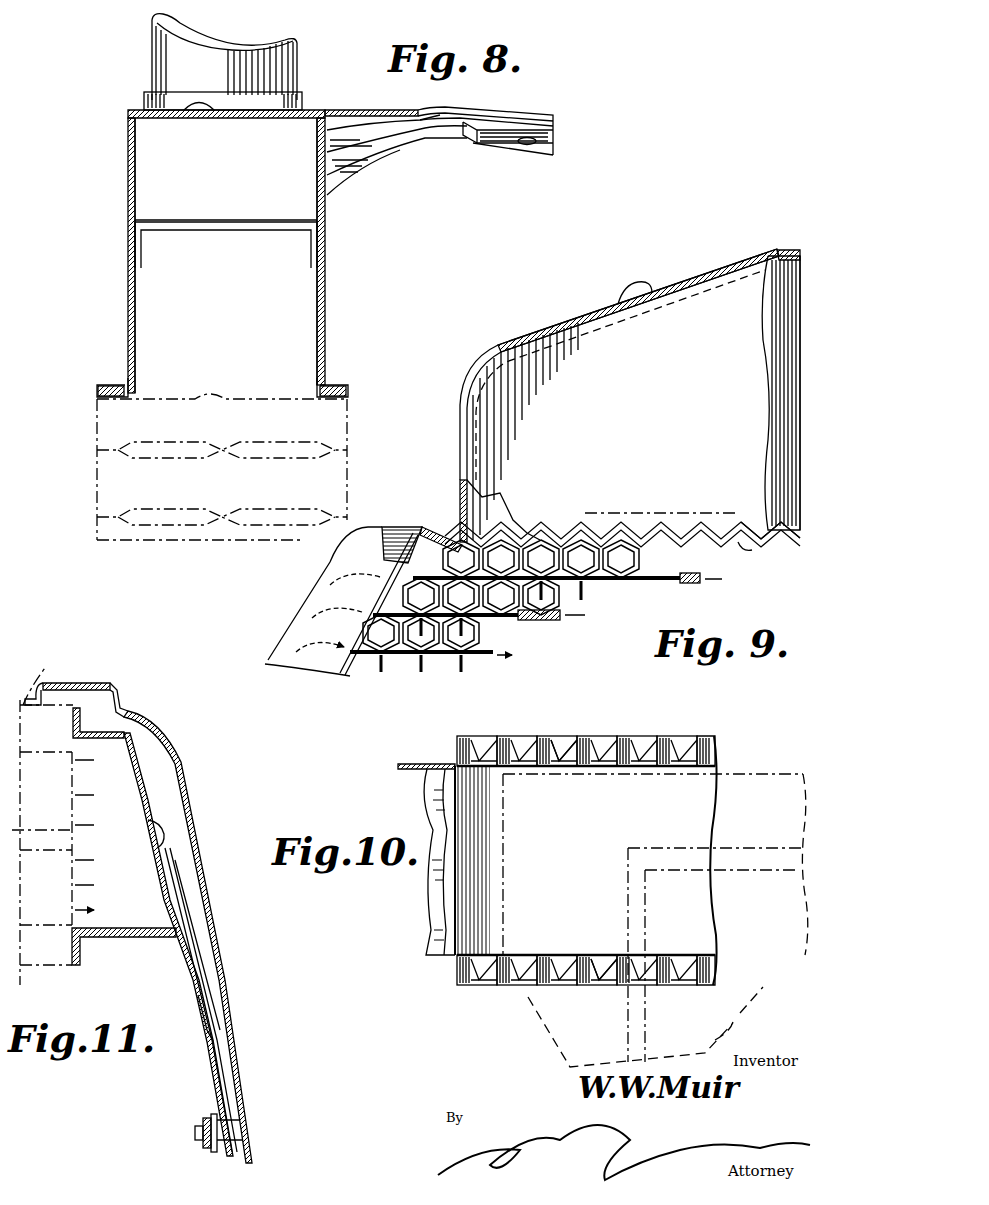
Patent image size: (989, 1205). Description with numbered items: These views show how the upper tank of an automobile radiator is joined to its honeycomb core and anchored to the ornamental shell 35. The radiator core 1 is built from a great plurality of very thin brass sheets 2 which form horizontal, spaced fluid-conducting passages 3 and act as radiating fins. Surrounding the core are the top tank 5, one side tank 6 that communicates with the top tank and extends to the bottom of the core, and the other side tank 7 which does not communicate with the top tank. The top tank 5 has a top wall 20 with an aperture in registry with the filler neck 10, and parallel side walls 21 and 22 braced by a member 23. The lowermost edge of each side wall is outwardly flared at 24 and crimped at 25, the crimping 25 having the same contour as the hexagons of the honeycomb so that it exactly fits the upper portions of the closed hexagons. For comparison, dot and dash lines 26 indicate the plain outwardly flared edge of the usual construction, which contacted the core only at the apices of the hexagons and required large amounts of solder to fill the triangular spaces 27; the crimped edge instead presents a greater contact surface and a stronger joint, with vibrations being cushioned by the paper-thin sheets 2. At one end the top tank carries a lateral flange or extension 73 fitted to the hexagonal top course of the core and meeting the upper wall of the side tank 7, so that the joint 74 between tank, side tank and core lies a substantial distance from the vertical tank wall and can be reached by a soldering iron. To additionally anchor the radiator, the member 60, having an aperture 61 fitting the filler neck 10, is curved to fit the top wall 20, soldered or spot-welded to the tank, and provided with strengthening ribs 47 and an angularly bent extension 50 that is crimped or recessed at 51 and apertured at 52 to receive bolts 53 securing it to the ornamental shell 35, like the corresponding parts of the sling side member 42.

In FIG. 8, the radiator core 1 is at (100, 500).
In FIG. 9, the brass sheets 2 is at (605, 559).
In FIG. 8, the fluid-conducting passages 3 is at (170, 447).
In FIG. 9, the fluid-conducting passages 3 is at (690, 576).
In FIG. 11, the fluid-conducting passages 3 is at (44, 752).
In FIG. 9, the top tank 5 is at (495, 381).
In FIG. 10, the top tank 5 is at (704, 824).
In FIG. 11, the side tank 6 is at (130, 935).
In FIG. 9, the side tank 7 is at (401, 528).
In FIG. 10, the side tank 7 is at (408, 776).
In FIG. 8, the filler neck 10 is at (155, 57).
In FIG. 8, the top wall 20 is at (318, 118).
In FIG. 9, the top wall 20 is at (808, 290).
In FIG. 8, the side wall 21 is at (325, 298).
In FIG. 9, the side wall 21 is at (762, 467).
In FIG. 8, the side wall 22 is at (128, 294).
In FIG. 9, the side wall 22 is at (785, 404).
In FIG. 8, the bracing member 23 is at (237, 229).
In FIG. 8, the outwardly flared edge 24 is at (98, 387).
In FIG. 9, the outwardly flared edge 24 is at (742, 541).
In FIG. 10, the outwardly flared edge 24 is at (568, 736).
In FIG. 8, the crimping 25 is at (108, 386).
In FIG. 9, the crimping 25 is at (748, 546).
In FIG. 10, the crimping 25 is at (606, 745).
In FIG. 9, the outwardly flared bottom edge of usual construction 26 is at (695, 522).
In FIG. 9, the triangular spaces 27 is at (641, 536).
In FIG. 11, the ornamental shell 35 is at (198, 823).
In FIG. 11, the side member of the sling 42 is at (140, 769).
In FIG. 8, the strengthening ribs 47 is at (198, 108).
In FIG. 9, the strengthening ribs 47 is at (641, 286).
In FIG. 10, the strengthening ribs 47 is at (738, 875).
In FIG. 11, the strengthening ribs 47 is at (164, 826).
In FIG. 8, the extension 50 is at (418, 112).
In FIG. 10, the extension 50 is at (765, 1000).
In FIG. 11, the extension 50 is at (207, 1033).
In FIG. 8, the recess 51 is at (498, 143).
In FIG. 11, the recess 51 is at (214, 1081).
In FIG. 8, the aperture 52 is at (526, 146).
In FIG. 11, the bolts 53 is at (203, 1131).
In FIG. 8, the anchor member 60 is at (128, 112).
In FIG. 9, the anchor member 60 is at (548, 333).
In FIG. 10, the anchor member 60 is at (760, 774).
In FIG. 8, the aperture 61 is at (148, 96).
In FIG. 9, the lateral flange 73 is at (450, 535).
In FIG. 9, the joint 74 is at (420, 527).